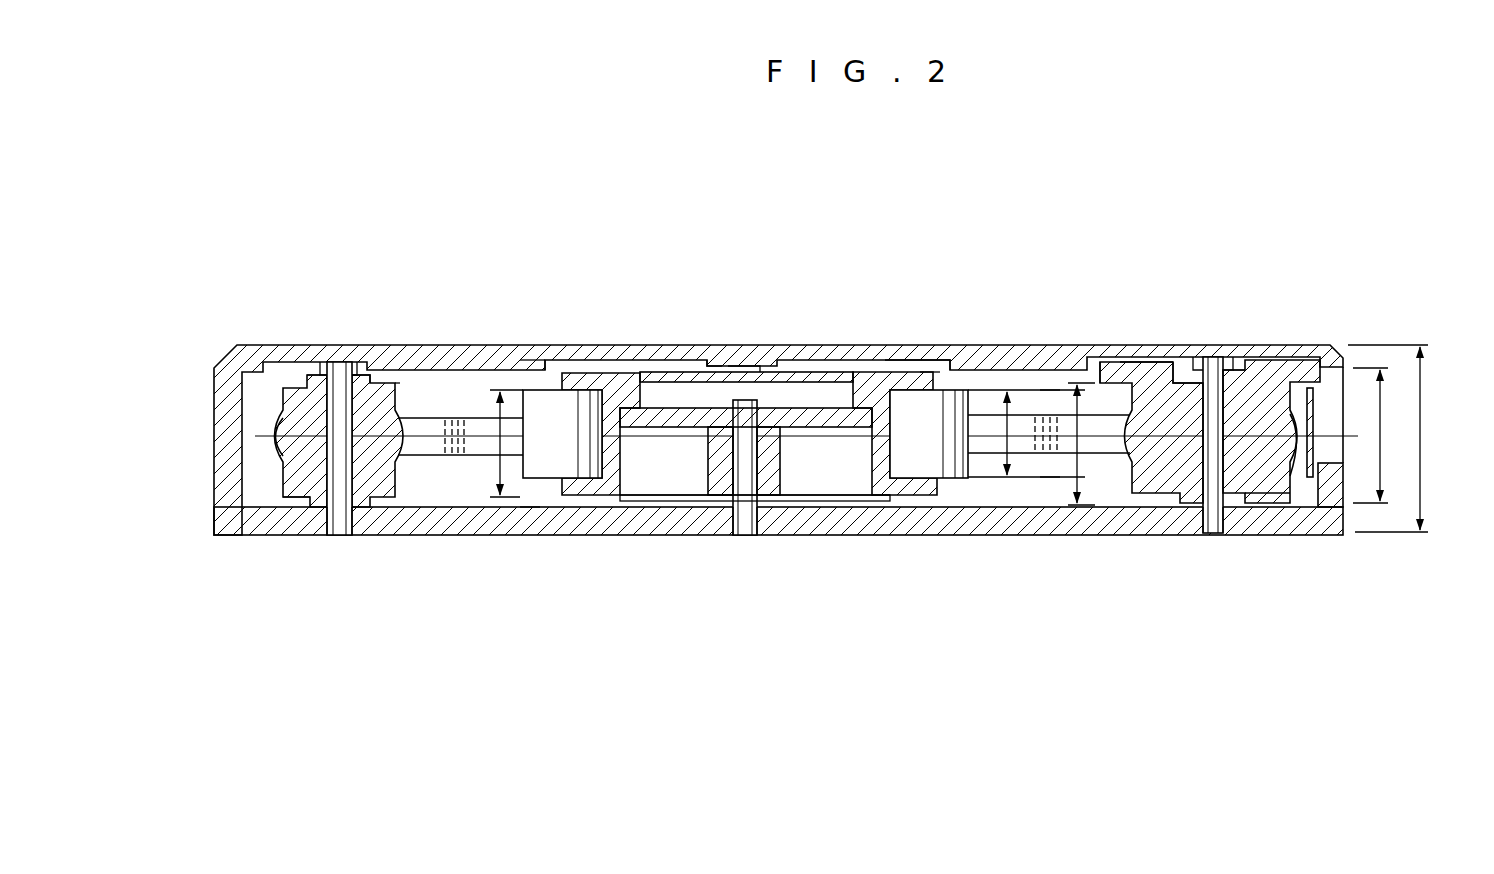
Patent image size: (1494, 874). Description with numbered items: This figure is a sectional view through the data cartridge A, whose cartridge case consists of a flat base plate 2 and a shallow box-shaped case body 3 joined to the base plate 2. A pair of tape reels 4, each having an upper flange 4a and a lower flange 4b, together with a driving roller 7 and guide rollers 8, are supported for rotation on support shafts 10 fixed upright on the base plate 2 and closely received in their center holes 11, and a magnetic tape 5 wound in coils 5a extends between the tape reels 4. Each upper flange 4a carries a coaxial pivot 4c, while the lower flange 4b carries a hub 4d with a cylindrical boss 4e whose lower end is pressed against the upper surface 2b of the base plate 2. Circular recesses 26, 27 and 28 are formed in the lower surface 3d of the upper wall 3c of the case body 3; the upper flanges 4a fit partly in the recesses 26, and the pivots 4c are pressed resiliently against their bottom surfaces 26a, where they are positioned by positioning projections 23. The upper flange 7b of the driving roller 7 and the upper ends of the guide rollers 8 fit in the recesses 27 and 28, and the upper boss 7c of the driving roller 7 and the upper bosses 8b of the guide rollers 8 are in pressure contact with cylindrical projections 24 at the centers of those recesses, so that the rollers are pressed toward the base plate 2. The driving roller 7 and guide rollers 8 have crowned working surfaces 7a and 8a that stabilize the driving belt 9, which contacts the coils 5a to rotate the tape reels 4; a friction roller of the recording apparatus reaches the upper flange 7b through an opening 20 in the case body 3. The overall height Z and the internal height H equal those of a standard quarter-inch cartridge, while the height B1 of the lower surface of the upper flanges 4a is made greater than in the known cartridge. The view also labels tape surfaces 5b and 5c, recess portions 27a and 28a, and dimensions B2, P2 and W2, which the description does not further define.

The base plate 2 is at (578, 518).
The upper surface of the base plate 2b is at (527, 500).
The case body 3 is at (598, 343).
The upper wall of the case body 3c is at (548, 365).
The lower surface of the upper wall 3d is at (525, 360).
The tape reel 4 is at (835, 372).
The upper flange 4a is at (796, 378).
The lower flange 4b is at (888, 496).
The pivot 4c is at (743, 366).
The hub 4d is at (632, 478).
The cylindrical boss 4e is at (703, 497).
The magnetic tape 5 is at (990, 455).
The coils of the magnetic tape 5a is at (935, 480).
The lens upper surface 5b is at (1050, 375).
The lens lower surface 5c is at (1047, 490).
The driving roller 7 is at (1253, 392).
The crowned working surface of the driving roller 7a is at (1263, 490).
The upper flange of the driving roller 7b is at (1308, 362).
The cylindrical boss of the driving roller 7c is at (1233, 372).
The guide roller 8 is at (300, 405).
The crowned working surface of the guide roller 8a is at (300, 500).
The boss of the guide roller 8b is at (312, 374).
The driving belt 9 is at (272, 440).
The support shaft 10 is at (338, 362).
The center hole 11 is at (362, 500).
The opening 20 is at (1343, 460).
The positioning projection 23 is at (712, 363).
The cylindrical projection 24 is at (360, 374).
The circular recess 26 is at (912, 357).
The bottom surface of the circular recess 26a is at (930, 372).
The circular recess 27 is at (1094, 372).
The holder flange surface 27a is at (1130, 365).
The circular recess 28 is at (385, 368).
The holder shoulder 28a is at (410, 370).
The finder unit A is at (992, 212).
The height of the lower surface of the upper flanges B1 is at (497, 500).
The lens height B2 is at (1083, 470).
The height of the internal space H is at (1380, 432).
The lens pitch P2 is at (435, 470).
The lens width W2 is at (1012, 388).
The overall height dimension Z is at (1420, 383).